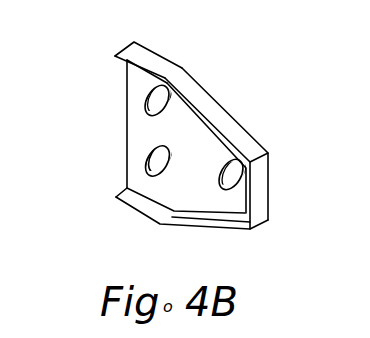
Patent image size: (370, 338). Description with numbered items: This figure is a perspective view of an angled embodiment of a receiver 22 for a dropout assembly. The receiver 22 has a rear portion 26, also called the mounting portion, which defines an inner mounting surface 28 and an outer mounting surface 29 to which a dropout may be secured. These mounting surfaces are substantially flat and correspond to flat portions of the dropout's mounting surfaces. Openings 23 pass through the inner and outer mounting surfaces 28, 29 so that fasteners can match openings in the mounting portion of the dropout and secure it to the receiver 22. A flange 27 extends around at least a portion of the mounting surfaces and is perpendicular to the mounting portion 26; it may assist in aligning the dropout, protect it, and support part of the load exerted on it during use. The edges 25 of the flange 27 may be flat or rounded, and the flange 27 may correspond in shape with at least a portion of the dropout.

The receiver 22 is at (240, 63).
The openings 23 is at (158, 101).
The edges of the flange 25 is at (205, 213).
The rear portion 26 is at (178, 192).
The flange 27 is at (233, 124).
The inner mounting surface 28 is at (150, 130).
The outer mounting surface 29 is at (138, 169).